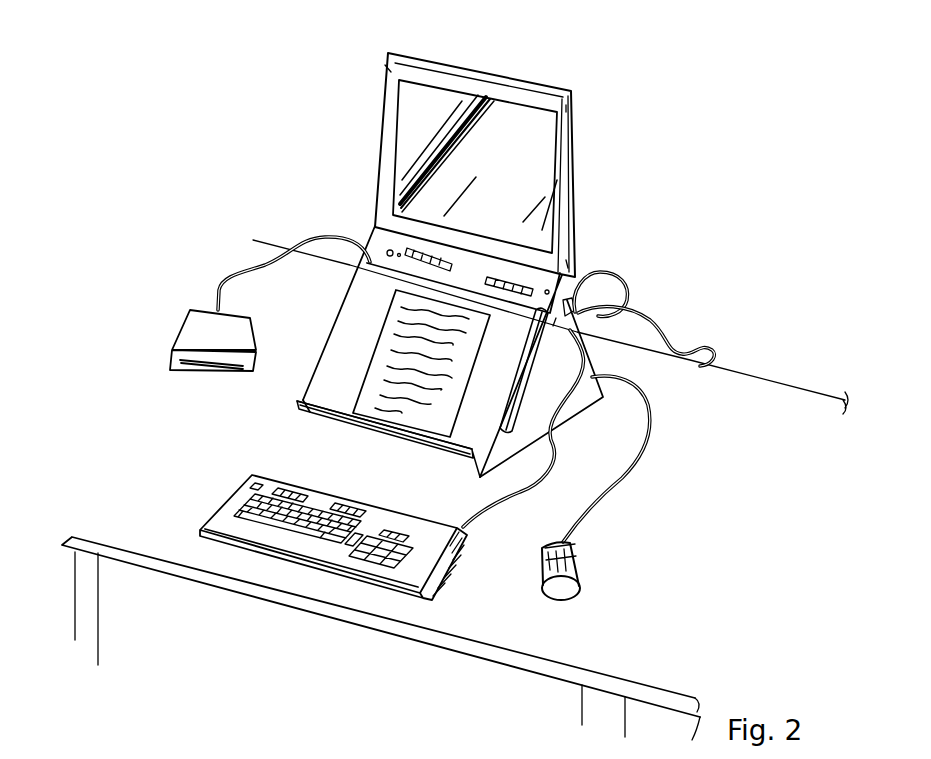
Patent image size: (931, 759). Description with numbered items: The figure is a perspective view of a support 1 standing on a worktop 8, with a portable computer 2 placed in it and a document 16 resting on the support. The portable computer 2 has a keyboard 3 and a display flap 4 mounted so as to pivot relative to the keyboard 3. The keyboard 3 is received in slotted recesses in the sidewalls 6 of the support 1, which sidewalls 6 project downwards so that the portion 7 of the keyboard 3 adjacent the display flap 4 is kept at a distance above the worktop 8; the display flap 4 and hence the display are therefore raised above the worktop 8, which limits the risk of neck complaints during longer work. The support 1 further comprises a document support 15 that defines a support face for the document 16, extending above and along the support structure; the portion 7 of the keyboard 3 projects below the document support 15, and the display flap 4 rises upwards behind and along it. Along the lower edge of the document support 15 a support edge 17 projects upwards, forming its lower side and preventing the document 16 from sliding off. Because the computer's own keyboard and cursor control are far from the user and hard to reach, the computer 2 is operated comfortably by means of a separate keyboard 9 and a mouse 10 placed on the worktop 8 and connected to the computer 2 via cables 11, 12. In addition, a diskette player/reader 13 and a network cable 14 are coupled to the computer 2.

The support 1 is at (330, 317).
The portable computer 2 is at (618, 130).
The keyboard 3 is at (552, 340).
The display flap 4 is at (572, 173).
The sidewalls 6 is at (305, 412).
The portion of the keyboard 7 is at (617, 285).
The worktop 8 is at (748, 555).
The separate keyboard 9 is at (433, 583).
The mouse 10 is at (572, 558).
The cable 11 is at (515, 498).
The cable 12 is at (634, 470).
The diskette player/reader 13 is at (183, 323).
The network cable 14 is at (690, 339).
The document support 15 is at (352, 387).
The document 16 is at (476, 359).
The support edge 17 is at (400, 437).